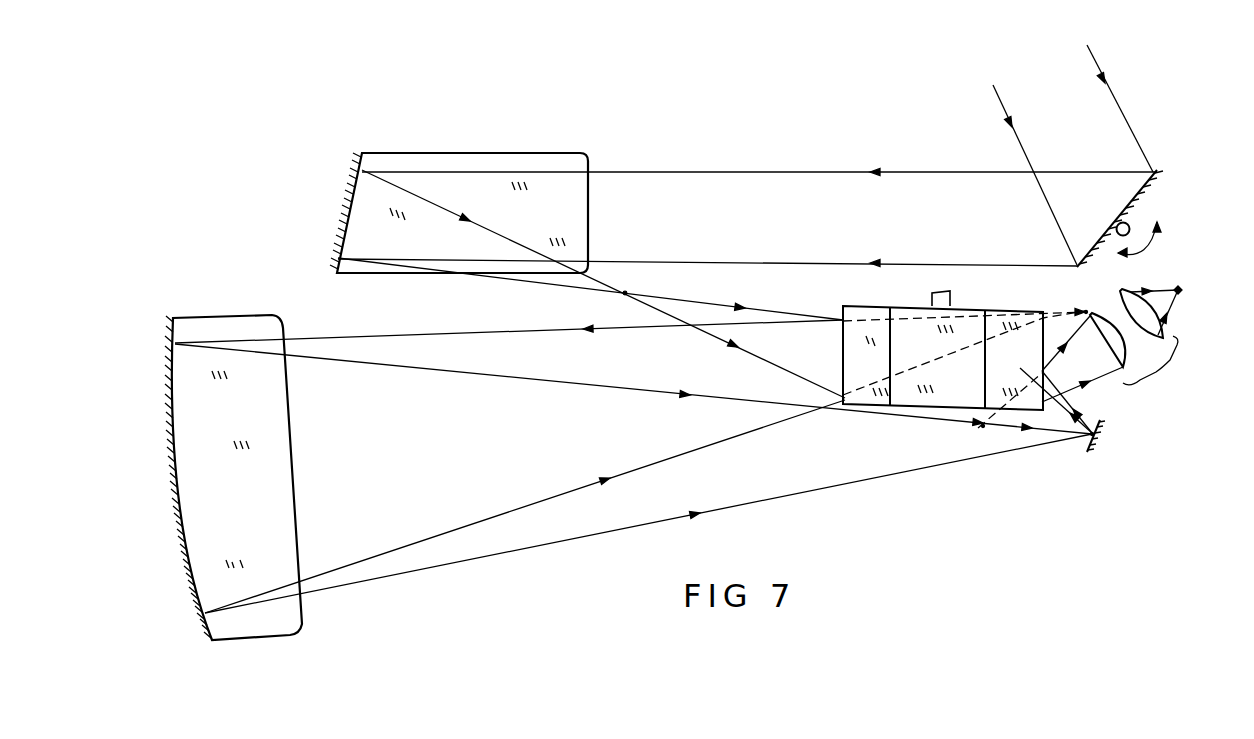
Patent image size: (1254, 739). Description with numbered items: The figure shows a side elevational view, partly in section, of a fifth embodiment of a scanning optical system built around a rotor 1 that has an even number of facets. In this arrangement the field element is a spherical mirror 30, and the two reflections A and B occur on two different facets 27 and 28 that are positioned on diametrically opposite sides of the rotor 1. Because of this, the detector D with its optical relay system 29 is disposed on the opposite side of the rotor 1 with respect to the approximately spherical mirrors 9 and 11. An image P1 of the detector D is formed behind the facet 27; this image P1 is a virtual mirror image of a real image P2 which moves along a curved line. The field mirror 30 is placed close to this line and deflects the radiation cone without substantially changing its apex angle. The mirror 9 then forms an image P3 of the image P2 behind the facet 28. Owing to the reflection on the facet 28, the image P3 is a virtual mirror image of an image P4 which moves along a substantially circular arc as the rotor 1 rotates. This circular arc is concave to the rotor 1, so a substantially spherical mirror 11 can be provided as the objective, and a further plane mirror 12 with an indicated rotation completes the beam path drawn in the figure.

The rotor 1 is at (905, 407).
The spherical mirror 9 is at (242, 636).
The spherical mirror 11 is at (423, 114).
The rotatable scanning mirror 12 is at (1191, 187).
The facet 27 is at (1043, 340).
The facet 28 is at (845, 312).
The optical relay system 29 is at (1139, 348).
The field mirror 30 is at (1102, 427).
The reflection A is at (1018, 346).
The reflection B is at (843, 357).
The detector D is at (1220, 273).
The image of the detector P1 is at (985, 427).
The real image P2 is at (1090, 434).
The image P3 is at (1090, 280).
The image P4 is at (623, 297).